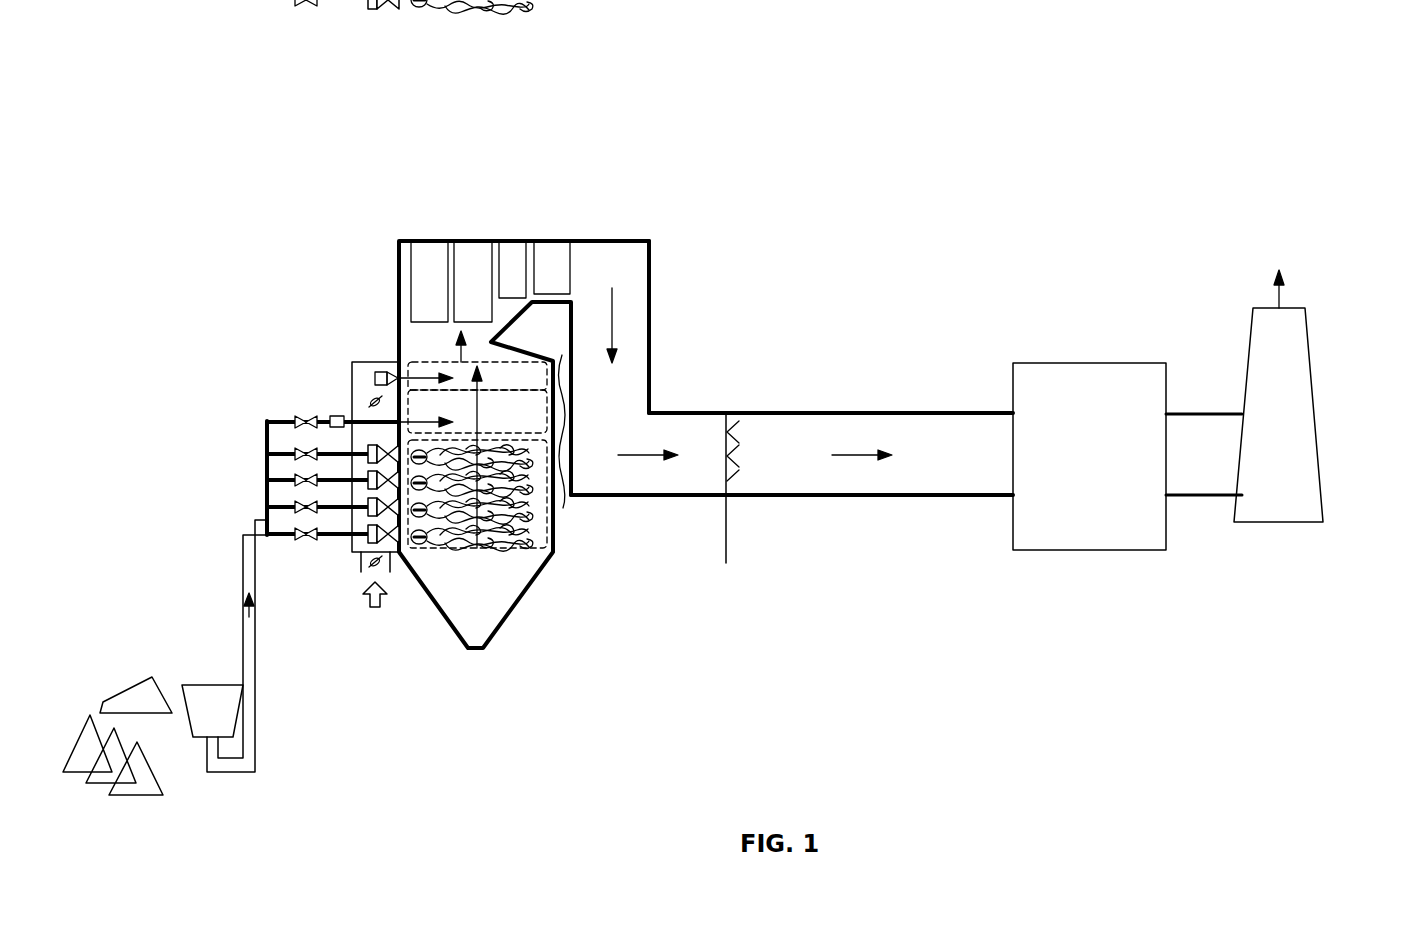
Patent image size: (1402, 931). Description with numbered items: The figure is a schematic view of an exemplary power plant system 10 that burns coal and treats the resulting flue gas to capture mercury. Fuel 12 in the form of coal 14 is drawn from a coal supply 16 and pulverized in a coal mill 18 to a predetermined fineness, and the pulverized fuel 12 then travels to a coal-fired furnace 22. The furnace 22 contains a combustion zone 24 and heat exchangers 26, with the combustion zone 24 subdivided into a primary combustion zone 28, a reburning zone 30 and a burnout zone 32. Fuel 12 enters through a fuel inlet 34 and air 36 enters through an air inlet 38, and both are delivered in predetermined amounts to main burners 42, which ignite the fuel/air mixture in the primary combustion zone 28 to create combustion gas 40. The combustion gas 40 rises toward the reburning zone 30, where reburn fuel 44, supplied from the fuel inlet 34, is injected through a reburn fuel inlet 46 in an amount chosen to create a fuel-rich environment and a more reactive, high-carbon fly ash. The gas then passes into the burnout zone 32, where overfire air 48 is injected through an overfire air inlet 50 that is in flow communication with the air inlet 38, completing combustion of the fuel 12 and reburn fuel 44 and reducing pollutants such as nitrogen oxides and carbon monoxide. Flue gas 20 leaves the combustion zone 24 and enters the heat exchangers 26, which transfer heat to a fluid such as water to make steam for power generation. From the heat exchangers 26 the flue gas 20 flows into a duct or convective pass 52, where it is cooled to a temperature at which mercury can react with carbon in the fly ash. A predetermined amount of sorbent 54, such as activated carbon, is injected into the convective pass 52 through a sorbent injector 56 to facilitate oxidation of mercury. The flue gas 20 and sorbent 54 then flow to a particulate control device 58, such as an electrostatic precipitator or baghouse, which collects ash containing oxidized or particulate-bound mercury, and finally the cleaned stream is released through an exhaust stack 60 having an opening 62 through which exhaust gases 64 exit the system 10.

The power plant system 10 is at (198, 142).
The fuel 12 is at (243, 617).
The coal 14 is at (85, 725).
The coal supply 16 is at (140, 693).
The coal mill 18 is at (208, 683).
The flue gas 20 is at (452, 345).
The furnace 22 is at (502, 628).
The combustion zone 24 is at (565, 455).
The heat exchangers 26 is at (428, 251).
The primary combustion zone 28 is at (525, 557).
The reburning zone 30 is at (515, 402).
The burnout zone 32 is at (432, 360).
The fuel inlet 34 is at (258, 527).
The air 36 is at (375, 608).
The air inlet 38 is at (385, 568).
The combustion gas 40 is at (497, 517).
The burners 42 is at (365, 448).
The reburn fuel 44 is at (420, 418).
The reburn fuel inlet 46 is at (368, 408).
The overfire air 48 is at (397, 362).
The overfire air inlet 50 is at (377, 377).
The convective pass 52 is at (605, 240).
The sorbent 54 is at (863, 453).
The sorbent injector 56 is at (724, 506).
The particulate control device 58 is at (1090, 550).
The exhaust stack 60 is at (1310, 340).
The opening 62 is at (1268, 306).
The exhaust gases 64 is at (1282, 296).